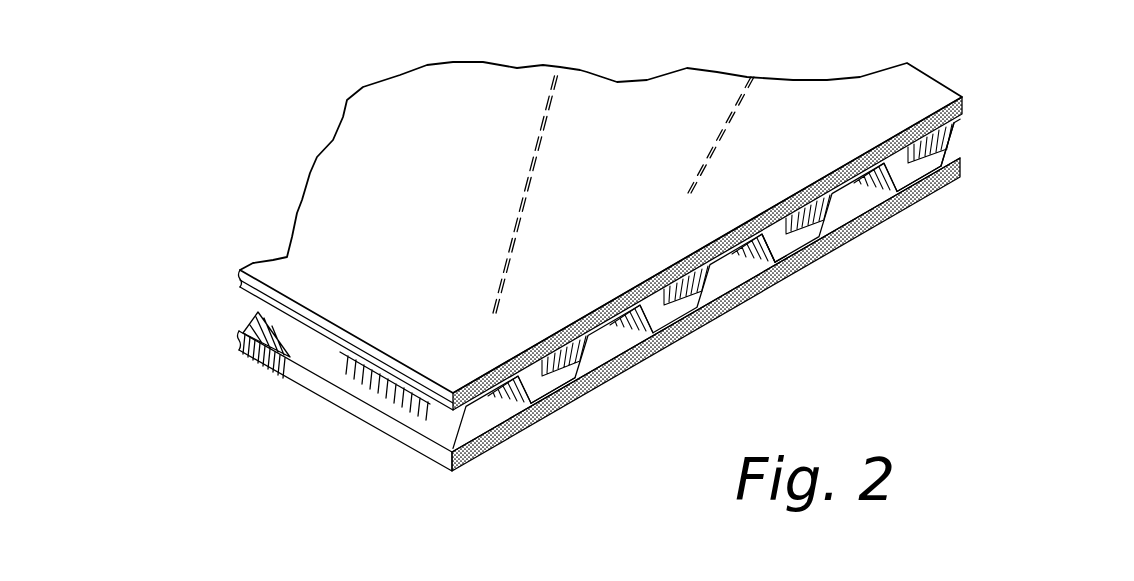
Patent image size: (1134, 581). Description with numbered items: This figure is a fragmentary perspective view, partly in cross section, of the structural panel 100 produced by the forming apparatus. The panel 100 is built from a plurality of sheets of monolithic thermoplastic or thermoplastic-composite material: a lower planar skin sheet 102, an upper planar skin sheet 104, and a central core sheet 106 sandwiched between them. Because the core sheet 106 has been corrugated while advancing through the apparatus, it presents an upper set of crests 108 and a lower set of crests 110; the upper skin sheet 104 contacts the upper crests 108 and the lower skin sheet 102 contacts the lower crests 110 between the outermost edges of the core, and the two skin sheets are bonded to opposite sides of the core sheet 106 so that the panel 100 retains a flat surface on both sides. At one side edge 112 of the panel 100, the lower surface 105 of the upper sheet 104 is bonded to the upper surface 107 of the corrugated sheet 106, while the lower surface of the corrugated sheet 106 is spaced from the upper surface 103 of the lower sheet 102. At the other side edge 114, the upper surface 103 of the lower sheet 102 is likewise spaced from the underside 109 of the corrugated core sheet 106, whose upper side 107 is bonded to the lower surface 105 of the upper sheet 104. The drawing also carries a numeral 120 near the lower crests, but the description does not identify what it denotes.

The structural panel 100 is at (424, 36).
The lower planar skin sheet 102 is at (468, 460).
The upper surface of lower sheet 103 is at (512, 410).
The upper planar skin sheet 104 is at (442, 201).
The lower surface of upper sheet 105 is at (763, 232).
The central core sheet 106 is at (512, 403).
The upper surface of corrugated sheet 107 is at (366, 358).
The upper crests 108 is at (840, 200).
The underside of corrugated panel 109 is at (954, 118).
The lower crests 110 is at (568, 402).
The side edge 112 is at (250, 307).
The other side edge 114 is at (953, 137).
The bond joint 120 is at (791, 250).